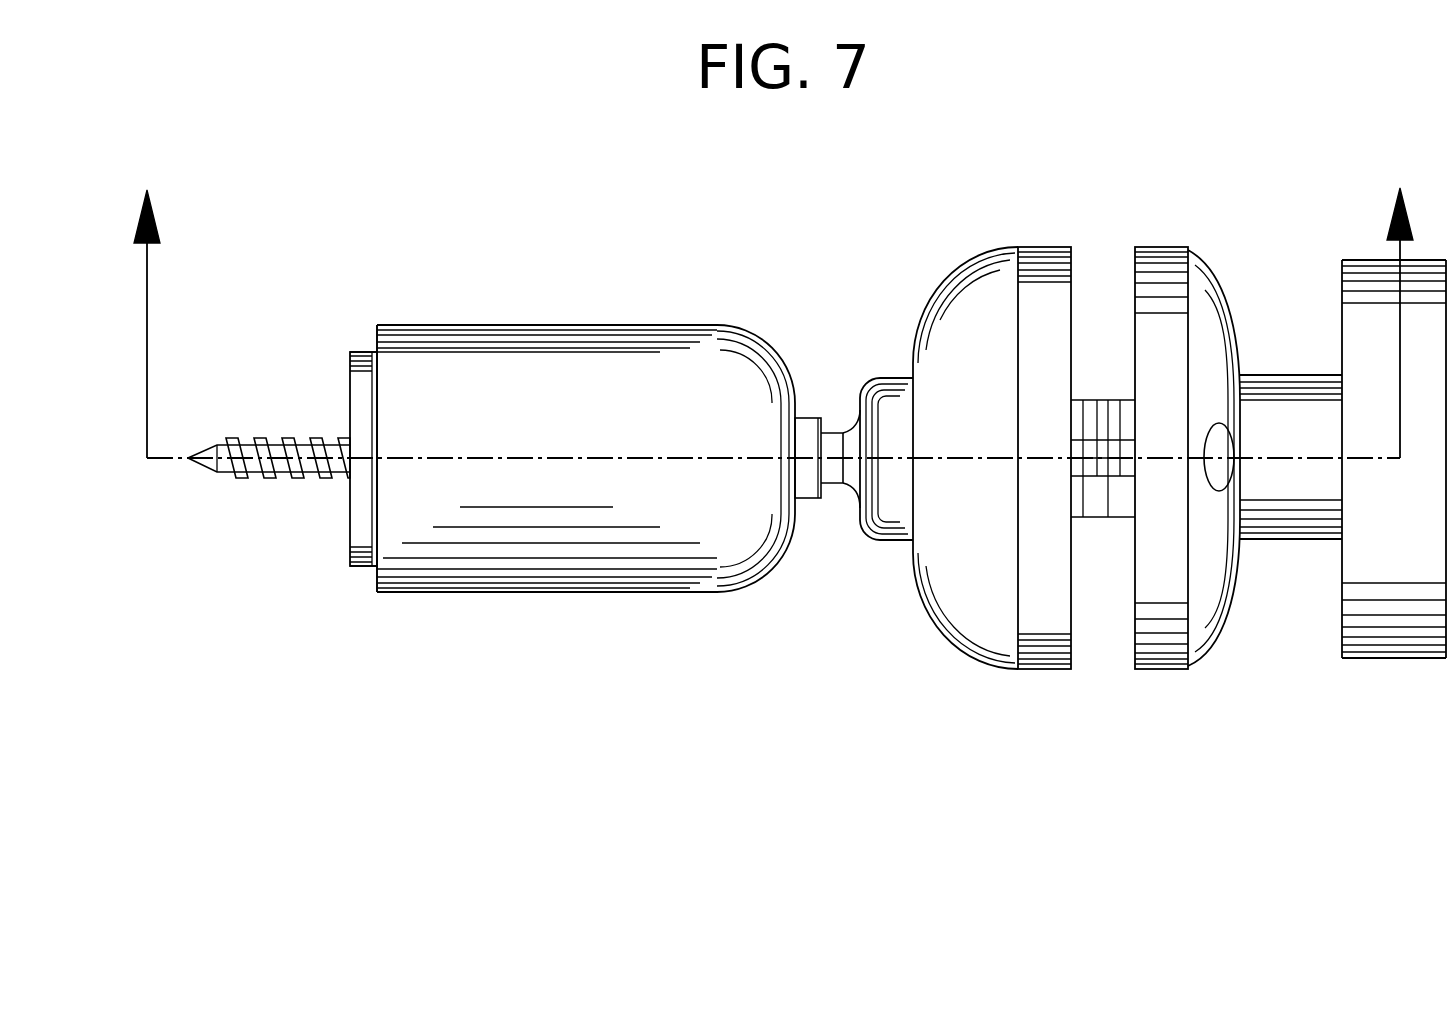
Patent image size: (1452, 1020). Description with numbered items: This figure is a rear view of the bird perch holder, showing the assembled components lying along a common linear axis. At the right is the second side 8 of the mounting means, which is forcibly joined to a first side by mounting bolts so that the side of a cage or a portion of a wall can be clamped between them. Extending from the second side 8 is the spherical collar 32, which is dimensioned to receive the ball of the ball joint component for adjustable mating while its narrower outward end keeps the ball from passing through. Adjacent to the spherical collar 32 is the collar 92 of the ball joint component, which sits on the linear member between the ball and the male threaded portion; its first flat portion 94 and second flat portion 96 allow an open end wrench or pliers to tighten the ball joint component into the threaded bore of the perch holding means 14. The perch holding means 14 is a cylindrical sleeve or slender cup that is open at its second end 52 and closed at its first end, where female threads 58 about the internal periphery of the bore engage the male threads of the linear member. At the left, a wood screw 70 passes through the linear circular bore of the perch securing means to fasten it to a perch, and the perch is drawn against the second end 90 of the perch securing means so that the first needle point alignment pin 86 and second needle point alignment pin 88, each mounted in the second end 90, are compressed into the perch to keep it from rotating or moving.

The second side 8 is at (771, 286).
The perch holding means 14 is at (533, 592).
The spherical collar 32 is at (899, 543).
The second end 52 is at (377, 338).
The female threads 58 is at (748, 333).
The wood screw 70 is at (240, 497).
The first needle point alignment pin 86 is at (329, 379).
The second needle point alignment pin 88 is at (330, 546).
The second end 90 is at (350, 400).
The collar 92 is at (808, 425).
The first flat portion 94 is at (812, 448).
The second flat portion 96 is at (807, 498).